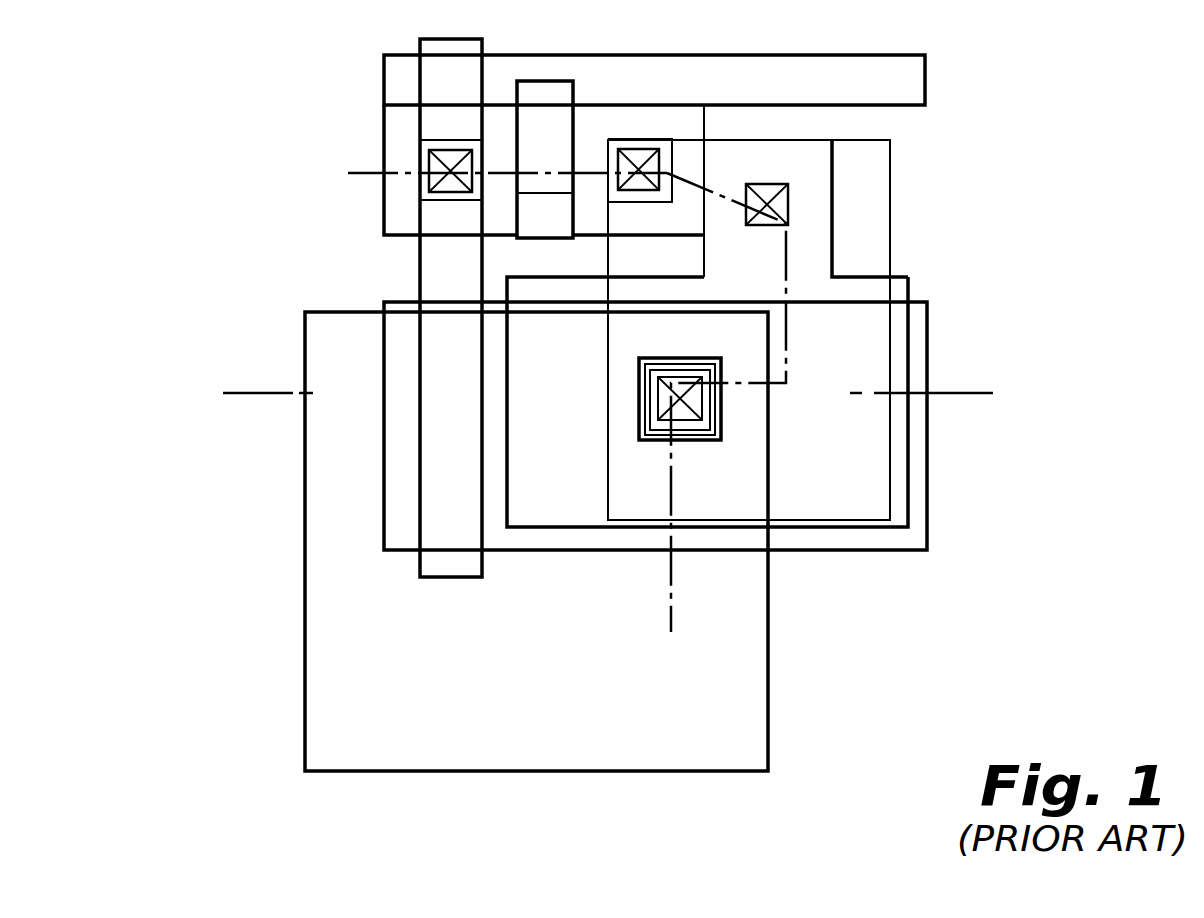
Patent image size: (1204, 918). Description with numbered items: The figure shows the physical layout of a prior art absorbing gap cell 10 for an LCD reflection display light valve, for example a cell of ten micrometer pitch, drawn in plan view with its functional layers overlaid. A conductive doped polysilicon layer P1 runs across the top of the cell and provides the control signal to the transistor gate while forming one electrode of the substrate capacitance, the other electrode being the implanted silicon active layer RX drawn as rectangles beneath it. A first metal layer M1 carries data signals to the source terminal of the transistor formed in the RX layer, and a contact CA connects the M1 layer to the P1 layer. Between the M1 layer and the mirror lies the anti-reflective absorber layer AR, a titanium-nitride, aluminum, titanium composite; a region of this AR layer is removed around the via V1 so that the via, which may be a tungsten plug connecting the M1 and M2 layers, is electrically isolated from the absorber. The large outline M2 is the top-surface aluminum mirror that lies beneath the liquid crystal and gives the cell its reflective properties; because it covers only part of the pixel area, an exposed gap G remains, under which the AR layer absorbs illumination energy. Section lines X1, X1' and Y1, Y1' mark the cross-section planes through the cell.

The absorbing gap cell 10 is at (1032, 180).
The P1 polysilicon layer P1 is at (384, 80).
The RX layer RX is at (384, 133).
The gap G is at (392, 274).
The first metal layer M1 is at (418, 572).
The contact CA is at (788, 207).
The anti-reflective layer AR is at (639, 400).
The via V1 is at (690, 422).
The second metal layer M2 is at (768, 685).
The section line X1 is at (490, 203).
The section line X1' is at (696, 427).
The section line Y1 is at (247, 422).
The section line Y1' is at (945, 422).